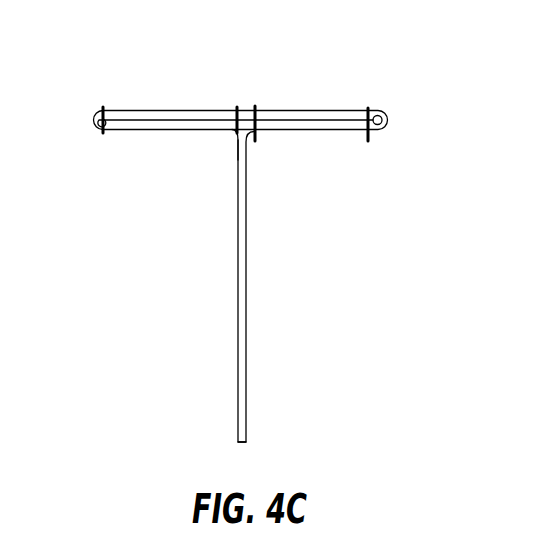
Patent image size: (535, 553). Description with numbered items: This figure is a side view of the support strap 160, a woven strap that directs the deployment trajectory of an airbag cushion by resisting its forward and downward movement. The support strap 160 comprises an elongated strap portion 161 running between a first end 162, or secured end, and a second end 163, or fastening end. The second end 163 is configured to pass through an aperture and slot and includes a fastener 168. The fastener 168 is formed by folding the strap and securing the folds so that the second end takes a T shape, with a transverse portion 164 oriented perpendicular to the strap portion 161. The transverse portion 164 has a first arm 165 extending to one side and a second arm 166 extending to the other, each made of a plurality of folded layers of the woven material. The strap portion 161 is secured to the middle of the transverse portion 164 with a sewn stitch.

The support strap 160 is at (128, 274).
The strap portion 161 is at (246, 287).
The first end 162 is at (246, 439).
The second end 163 is at (273, 138).
The transverse portion 164 is at (320, 110).
The first arm 165 is at (150, 110).
The second arm 166 is at (388, 113).
The fastener 168 is at (266, 104).